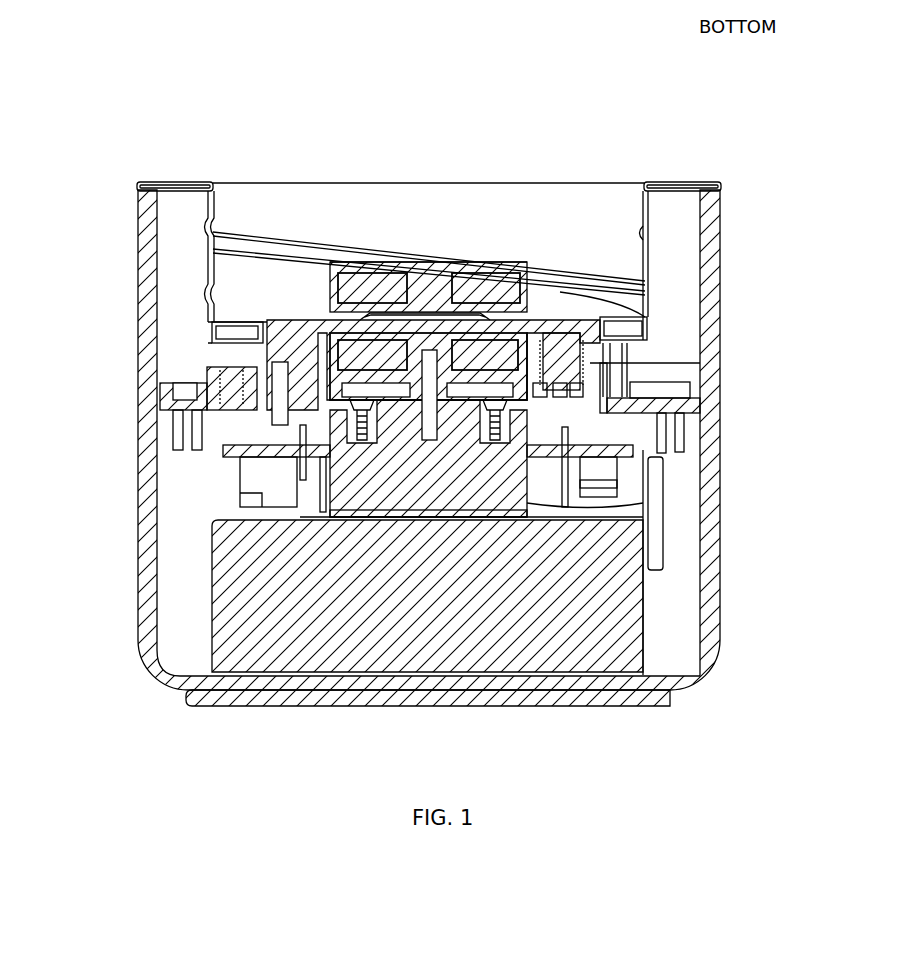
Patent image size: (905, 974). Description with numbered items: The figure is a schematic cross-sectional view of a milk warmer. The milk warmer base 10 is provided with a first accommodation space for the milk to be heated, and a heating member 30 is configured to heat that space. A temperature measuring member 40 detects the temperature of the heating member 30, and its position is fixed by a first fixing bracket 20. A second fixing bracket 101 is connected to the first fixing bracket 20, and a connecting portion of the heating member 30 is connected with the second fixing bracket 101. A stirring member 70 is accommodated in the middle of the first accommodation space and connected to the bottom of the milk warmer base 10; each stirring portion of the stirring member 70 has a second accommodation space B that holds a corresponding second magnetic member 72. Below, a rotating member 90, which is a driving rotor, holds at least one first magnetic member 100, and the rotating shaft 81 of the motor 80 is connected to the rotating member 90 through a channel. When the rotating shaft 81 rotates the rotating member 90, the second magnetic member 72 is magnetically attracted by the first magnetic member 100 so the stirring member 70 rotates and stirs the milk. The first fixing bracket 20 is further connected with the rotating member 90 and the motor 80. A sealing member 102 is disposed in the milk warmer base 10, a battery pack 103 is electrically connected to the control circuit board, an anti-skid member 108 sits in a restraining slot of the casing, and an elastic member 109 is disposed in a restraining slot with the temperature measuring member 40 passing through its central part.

The milk warmer base 10 is at (212, 213).
The first fixing bracket 20 is at (158, 388).
The heating member 30 is at (560, 296).
The temperature measuring member 40 is at (600, 363).
The stirring member 70 is at (427, 260).
The second magnetic member 72 is at (460, 270).
The second accommodation space B is at (513, 261).
The motor 80 is at (643, 503).
The rotating shaft 81 is at (320, 452).
The rotating member 90 is at (330, 411).
The first magnetic member 100 is at (640, 443).
The second fixing bracket 101 is at (235, 340).
The sealing member 102 is at (657, 338).
The battery pack 103 is at (488, 690).
The anti-skid member 108 is at (612, 706).
The elastic member 109 is at (583, 393).